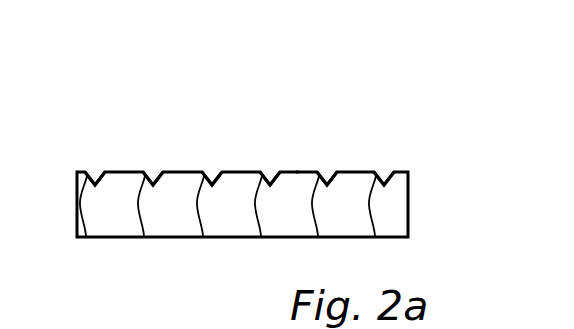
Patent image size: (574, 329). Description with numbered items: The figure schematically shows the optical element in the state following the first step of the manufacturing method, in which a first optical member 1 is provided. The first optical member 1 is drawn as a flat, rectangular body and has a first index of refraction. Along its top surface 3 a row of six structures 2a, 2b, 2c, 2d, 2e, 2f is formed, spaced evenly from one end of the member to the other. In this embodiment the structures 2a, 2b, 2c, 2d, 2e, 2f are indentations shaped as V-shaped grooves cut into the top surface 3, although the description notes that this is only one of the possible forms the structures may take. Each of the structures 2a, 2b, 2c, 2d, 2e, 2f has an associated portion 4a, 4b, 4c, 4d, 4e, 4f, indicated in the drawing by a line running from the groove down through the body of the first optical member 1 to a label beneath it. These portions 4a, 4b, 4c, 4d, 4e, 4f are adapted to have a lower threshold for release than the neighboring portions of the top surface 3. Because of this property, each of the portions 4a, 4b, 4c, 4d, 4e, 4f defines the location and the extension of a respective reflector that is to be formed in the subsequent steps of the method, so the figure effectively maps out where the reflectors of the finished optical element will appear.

The first optical member 1 is at (414, 121).
The top surface 3 is at (297, 172).
The structure 2a is at (96, 170).
The structure 2b is at (155, 170).
The structure 2c is at (214, 170).
The structure 2d is at (271, 170).
The structure 2e is at (328, 170).
The structure 2f is at (385, 170).
The portion 4a is at (86, 237).
The portion 4b is at (144, 237).
The portion 4c is at (203, 237).
The portion 4d is at (261, 237).
The portion 4e is at (318, 237).
The portion 4f is at (375, 237).